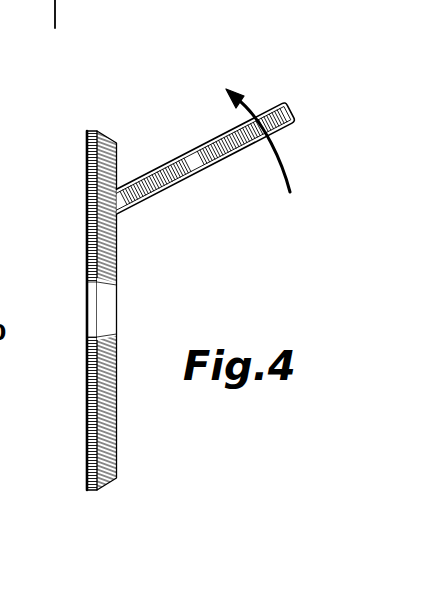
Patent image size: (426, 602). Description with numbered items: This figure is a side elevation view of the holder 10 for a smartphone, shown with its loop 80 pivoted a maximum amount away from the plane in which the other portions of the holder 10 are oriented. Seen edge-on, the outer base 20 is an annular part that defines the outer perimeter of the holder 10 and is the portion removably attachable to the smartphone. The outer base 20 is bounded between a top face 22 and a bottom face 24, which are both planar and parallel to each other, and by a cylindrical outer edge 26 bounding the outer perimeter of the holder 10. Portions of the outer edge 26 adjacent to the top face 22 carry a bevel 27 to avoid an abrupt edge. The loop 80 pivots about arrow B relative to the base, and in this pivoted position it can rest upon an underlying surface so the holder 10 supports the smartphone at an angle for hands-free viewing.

The holder 10 is at (145, 131).
The outer base 20 is at (102, 309).
The top face 22 is at (118, 412).
The bottom face 24 is at (87, 156).
The outer edge 26 is at (92, 130).
The bevel 27 is at (105, 130).
The loop 80 is at (296, 102).
The arrow B is at (289, 168).